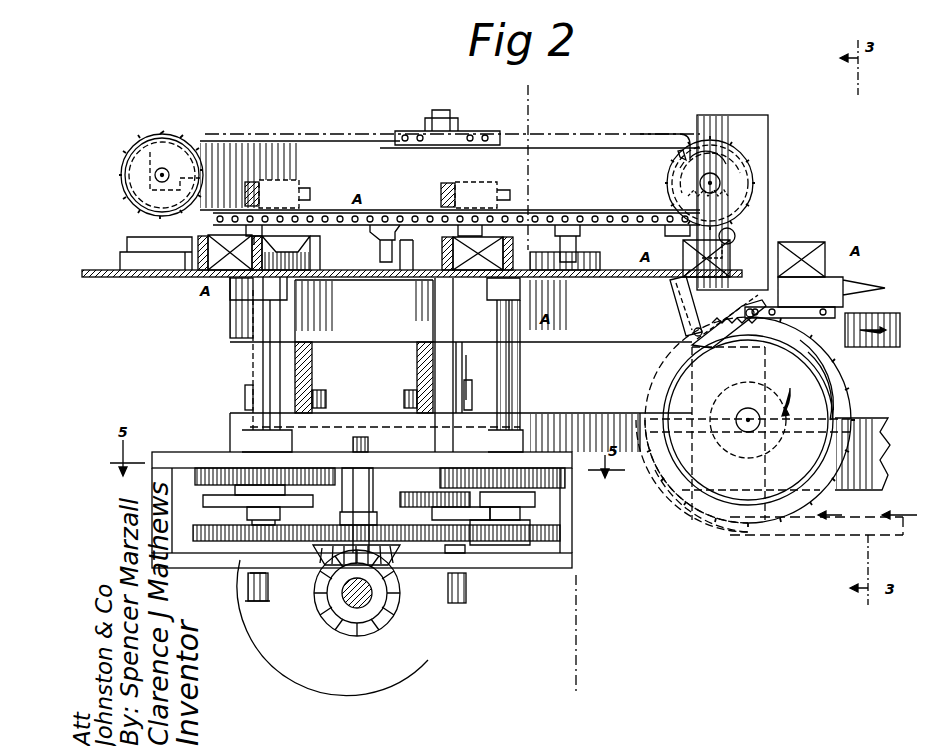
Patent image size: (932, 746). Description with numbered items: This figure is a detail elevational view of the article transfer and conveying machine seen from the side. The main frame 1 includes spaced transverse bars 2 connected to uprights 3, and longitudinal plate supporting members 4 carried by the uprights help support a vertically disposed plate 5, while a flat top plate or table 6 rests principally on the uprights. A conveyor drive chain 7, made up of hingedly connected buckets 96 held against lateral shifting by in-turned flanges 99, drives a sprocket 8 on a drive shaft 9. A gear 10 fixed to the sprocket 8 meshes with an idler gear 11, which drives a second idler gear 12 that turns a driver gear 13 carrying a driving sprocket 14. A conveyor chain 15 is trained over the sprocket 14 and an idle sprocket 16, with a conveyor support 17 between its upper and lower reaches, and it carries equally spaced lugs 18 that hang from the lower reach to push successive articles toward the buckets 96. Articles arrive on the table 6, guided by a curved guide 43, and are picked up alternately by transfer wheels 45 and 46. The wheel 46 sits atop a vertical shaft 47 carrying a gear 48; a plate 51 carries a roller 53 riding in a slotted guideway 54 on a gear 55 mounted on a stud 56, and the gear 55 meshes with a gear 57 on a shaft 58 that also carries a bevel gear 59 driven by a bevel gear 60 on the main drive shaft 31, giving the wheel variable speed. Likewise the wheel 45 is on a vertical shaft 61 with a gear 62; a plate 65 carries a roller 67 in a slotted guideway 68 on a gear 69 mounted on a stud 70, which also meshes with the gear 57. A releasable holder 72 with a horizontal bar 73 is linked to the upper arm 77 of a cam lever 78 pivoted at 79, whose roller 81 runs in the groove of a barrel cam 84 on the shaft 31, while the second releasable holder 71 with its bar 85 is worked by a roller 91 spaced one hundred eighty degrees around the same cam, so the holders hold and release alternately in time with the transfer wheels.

The main frame 1 is at (880, 425).
The transverse bars 2 is at (312, 368).
The uprights 3 is at (342, 317).
The longitudinal plate supporting members 4 is at (618, 345).
The vertically disposed plate 5 is at (765, 125).
The top plate or table 6 is at (514, 81).
The conveyor drive chain 7 is at (800, 540).
The sprocket 8 is at (848, 385).
The drive shaft 9 is at (748, 432).
The gear 10 is at (752, 365).
The idler gear 11 is at (710, 297).
The idler gear 12 is at (757, 240).
The driver gear 13 is at (745, 183).
The driving sprocket 14 is at (665, 136).
The conveyor chain 15 is at (405, 130).
The idle sprocket 16 is at (165, 150).
The conveyor support 17 is at (565, 152).
The lugs 18 is at (452, 122).
The main drive shaft 31 is at (372, 605).
The curved left hand guide 43 is at (130, 246).
The transfer wheel 45 is at (318, 265).
The transfer wheel 46 is at (548, 260).
The vertical shaft 47 is at (522, 408).
The gear 48 is at (560, 480).
The plate 51 is at (545, 507).
The roller 53 is at (500, 530).
The guideway 54 is at (470, 545).
The gear 55 is at (530, 540).
The stud or shaft 56 is at (450, 580).
The gear 57 is at (430, 525).
The shaft 58 is at (352, 445).
The bevel gear 59 is at (325, 565).
The bevel gear 60 is at (402, 608).
The vertical shaft 61 is at (253, 350).
The gear 62 is at (200, 468).
The plate 65 is at (203, 499).
The roller 67 is at (245, 468).
The slotted guideway 68 is at (240, 513).
The gear 69 is at (215, 545).
The stud 70 is at (230, 560).
The releasable holder 71 is at (268, 186).
The releasable holder 72 is at (460, 190).
The horizontal bar 73 is at (440, 193).
The upper arm 77 is at (470, 352).
The cam lever 78 is at (470, 365).
The pivot 79 is at (240, 397).
The roller 81 is at (458, 600).
The barrel cam 84 is at (428, 668).
The bar 85 is at (265, 188).
The roller 91 is at (258, 601).
The buckets 96 is at (850, 303).
The in-turned flanges 99 is at (888, 330).